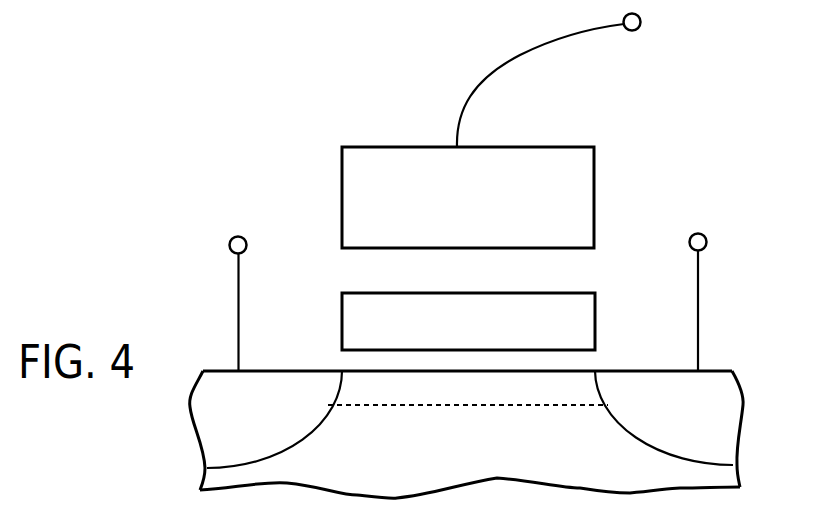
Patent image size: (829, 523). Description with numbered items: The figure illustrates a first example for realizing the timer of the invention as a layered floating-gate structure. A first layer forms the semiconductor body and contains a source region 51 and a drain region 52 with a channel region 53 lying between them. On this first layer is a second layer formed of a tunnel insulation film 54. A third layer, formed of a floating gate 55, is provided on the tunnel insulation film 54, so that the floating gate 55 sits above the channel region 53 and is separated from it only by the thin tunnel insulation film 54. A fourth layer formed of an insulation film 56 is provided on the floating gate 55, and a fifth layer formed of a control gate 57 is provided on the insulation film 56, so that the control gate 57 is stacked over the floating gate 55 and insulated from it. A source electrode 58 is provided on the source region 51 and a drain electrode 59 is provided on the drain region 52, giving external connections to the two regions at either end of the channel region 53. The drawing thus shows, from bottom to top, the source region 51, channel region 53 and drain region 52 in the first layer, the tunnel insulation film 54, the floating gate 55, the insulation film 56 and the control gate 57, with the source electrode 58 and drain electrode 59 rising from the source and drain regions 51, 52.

The source region 51 is at (303, 437).
The drain region 52 is at (635, 435).
The channel region 53 is at (532, 406).
The tunnel insulation film 54 is at (580, 357).
The floating gate 55 is at (597, 322).
The insulation film 56 is at (580, 273).
The control gate 57 is at (547, 147).
The source electrode 58 is at (229, 243).
The drain electrode 59 is at (707, 242).